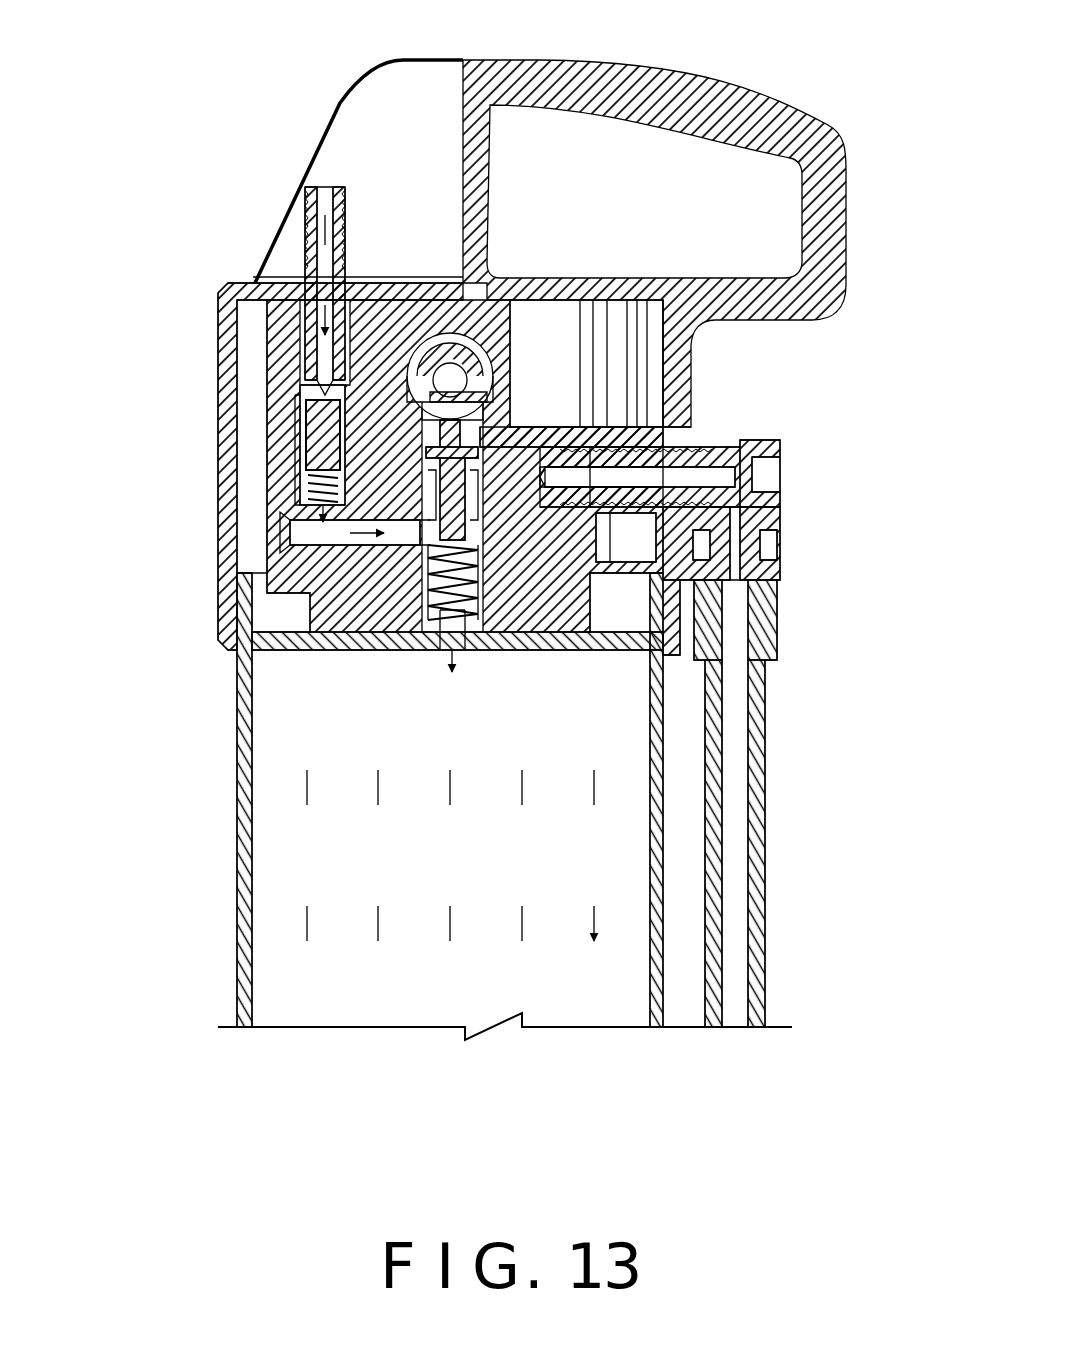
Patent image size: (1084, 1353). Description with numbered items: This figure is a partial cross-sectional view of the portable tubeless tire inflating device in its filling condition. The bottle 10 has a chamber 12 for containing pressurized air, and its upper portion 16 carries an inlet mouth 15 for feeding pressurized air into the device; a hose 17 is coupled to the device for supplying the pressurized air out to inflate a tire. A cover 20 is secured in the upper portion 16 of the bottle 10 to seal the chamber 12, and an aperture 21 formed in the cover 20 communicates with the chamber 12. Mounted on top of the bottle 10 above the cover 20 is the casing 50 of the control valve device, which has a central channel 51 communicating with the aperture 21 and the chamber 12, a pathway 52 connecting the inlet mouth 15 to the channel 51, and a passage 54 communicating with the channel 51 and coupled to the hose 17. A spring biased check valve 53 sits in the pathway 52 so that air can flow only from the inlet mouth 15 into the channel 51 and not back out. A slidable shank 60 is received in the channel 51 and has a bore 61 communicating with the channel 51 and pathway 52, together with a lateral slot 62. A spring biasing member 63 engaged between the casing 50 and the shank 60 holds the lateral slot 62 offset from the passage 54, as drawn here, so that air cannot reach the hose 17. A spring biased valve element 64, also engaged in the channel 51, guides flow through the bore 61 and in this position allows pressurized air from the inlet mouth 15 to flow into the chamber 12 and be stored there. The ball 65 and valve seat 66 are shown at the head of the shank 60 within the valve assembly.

The bottle 10 is at (240, 895).
The chamber 12 is at (265, 1008).
The inlet mouth 15 is at (306, 200).
The upper portion 16 is at (222, 306).
The hose 17 is at (766, 966).
The cover 20 is at (292, 650).
The aperture 21 is at (446, 652).
The casing 50 is at (322, 612).
The channel 51 is at (306, 520).
The pathway 52 is at (278, 395).
The spring biased check valve 53 is at (312, 432).
The passage 54 is at (690, 432).
The shank 60 is at (488, 432).
The bore 61 is at (500, 425).
The lateral slot 62 is at (646, 398).
The spring biasing member 63 is at (436, 628).
The spring biased valve element 64 is at (482, 537).
The ball 65 is at (448, 338).
The valve seat 66 is at (515, 404).